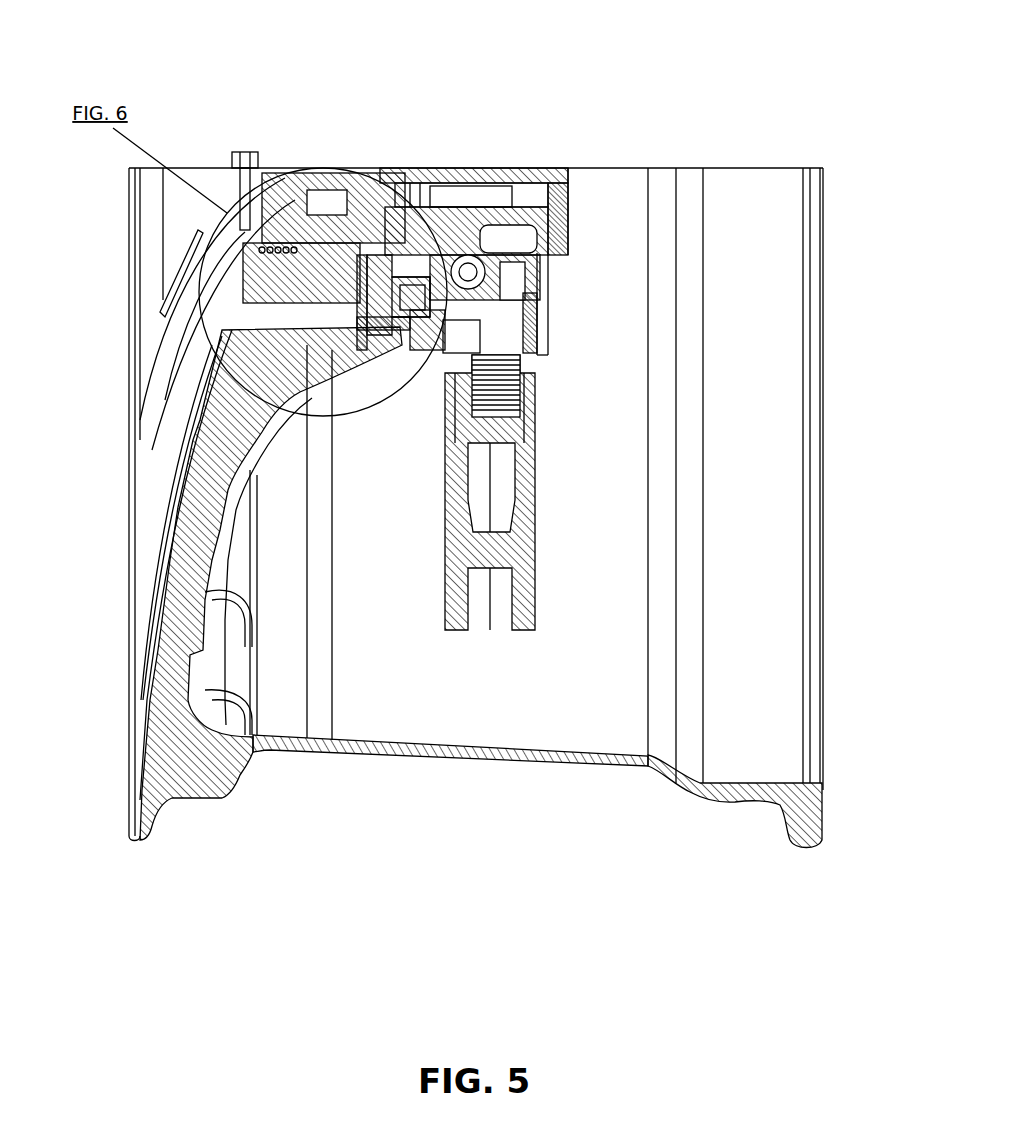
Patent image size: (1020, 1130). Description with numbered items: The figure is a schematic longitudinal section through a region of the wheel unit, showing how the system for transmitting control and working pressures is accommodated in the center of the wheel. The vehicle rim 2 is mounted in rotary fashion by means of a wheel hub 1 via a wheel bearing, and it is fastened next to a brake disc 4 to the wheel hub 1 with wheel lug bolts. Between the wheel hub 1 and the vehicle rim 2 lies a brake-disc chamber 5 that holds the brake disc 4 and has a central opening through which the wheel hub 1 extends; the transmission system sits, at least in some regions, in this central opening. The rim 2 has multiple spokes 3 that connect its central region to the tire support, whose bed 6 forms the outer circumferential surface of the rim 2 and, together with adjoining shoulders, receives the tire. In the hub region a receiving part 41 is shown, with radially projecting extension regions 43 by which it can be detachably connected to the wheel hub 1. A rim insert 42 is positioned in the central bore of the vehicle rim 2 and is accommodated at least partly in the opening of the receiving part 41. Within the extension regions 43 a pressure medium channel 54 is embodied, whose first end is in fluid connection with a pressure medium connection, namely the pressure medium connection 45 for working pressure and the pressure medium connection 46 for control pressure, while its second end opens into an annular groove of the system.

The wheel hub 1 is at (430, 305).
The vehicle rim 2 is at (193, 747).
The spoke 3 is at (180, 650).
The brake disc 4 is at (527, 510).
The brake-disc chamber 5 is at (392, 345).
The bed 6 is at (430, 785).
The receiving part 41 is at (303, 245).
The rim insert 42 is at (280, 208).
The extension region 43 is at (372, 292).
The pressure medium connection for working pressure 45 is at (402, 318).
The pressure medium connection for control pressure 46 is at (435, 191).
The pressure medium channel 54 is at (355, 250).